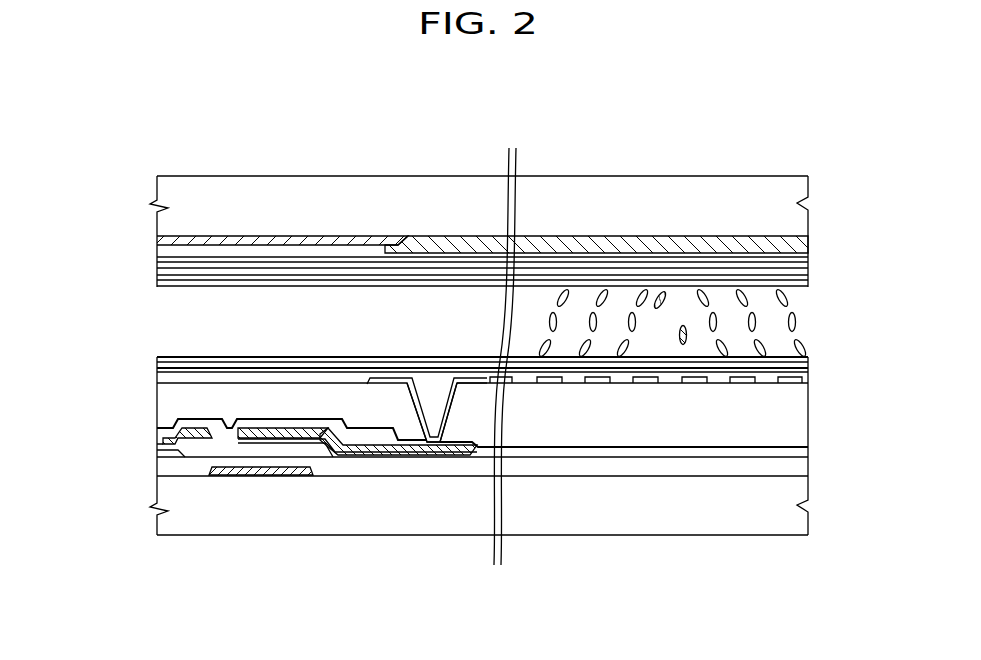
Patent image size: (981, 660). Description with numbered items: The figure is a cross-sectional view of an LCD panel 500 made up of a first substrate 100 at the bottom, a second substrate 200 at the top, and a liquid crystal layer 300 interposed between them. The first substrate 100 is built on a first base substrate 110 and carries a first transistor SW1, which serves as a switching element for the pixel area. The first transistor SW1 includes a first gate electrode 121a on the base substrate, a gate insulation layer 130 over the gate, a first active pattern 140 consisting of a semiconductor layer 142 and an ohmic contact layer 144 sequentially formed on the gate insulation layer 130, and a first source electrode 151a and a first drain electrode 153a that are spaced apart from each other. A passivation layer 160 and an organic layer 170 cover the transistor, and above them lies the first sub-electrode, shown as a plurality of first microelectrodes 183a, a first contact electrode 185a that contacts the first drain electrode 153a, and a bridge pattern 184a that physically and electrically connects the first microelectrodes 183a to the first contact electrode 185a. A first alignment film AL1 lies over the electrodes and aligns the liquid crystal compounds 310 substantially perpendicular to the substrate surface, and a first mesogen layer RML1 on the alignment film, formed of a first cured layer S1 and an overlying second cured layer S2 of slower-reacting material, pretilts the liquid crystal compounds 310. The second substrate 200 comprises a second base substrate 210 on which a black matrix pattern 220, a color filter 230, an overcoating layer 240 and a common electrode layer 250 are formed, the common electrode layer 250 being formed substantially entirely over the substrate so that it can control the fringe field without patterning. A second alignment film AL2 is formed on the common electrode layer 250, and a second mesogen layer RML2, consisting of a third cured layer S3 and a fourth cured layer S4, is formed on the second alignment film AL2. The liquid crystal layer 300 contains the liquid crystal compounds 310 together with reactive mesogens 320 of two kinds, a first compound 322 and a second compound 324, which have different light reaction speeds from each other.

The LCD panel 500 is at (508, 70).
The second substrate 200 is at (816, 174).
The second base substrate 210 is at (265, 186).
The black matrix pattern 220 is at (345, 236).
The color filter 230 is at (436, 246).
The overcoating layer 240 is at (482, 256).
The common electrode layer 250 is at (555, 264).
The second alignment film AL2 is at (597, 273).
The second mesogen layer RML2 is at (111, 262).
The third cured layer S3 is at (157, 280).
The fourth cured layer S4 is at (157, 285).
The liquid crystal layer 300 is at (816, 288).
The liquid crystal compounds 310 is at (550, 322).
The reactive mesogens 320 is at (713, 120).
The first compound 322 is at (660, 292).
The second compound 324 is at (684, 326).
The first substrate 100 is at (816, 378).
The first mesogen layer RML1 is at (111, 343).
The first cured layer S1 is at (157, 368).
The second cured layer S2 is at (157, 362).
The first alignment film AL1 is at (667, 373).
The first microelectrodes 183a is at (738, 378).
The organic layer 170 is at (722, 435).
The passivation layer 160 is at (622, 452).
The gate insulation layer 130 is at (573, 467).
The first base substrate 110 is at (527, 527).
The bridge pattern 184a is at (483, 386).
The first contact electrode 185a is at (425, 451).
The first transistor SW1 is at (370, 604).
The first gate electrode 121a is at (243, 477).
The first source electrode 151a is at (200, 436).
The first drain electrode 153a is at (289, 438).
The first active pattern 140 is at (393, 570).
The semiconductor layer 142 is at (340, 451).
The ohmic contact layer 144 is at (363, 450).